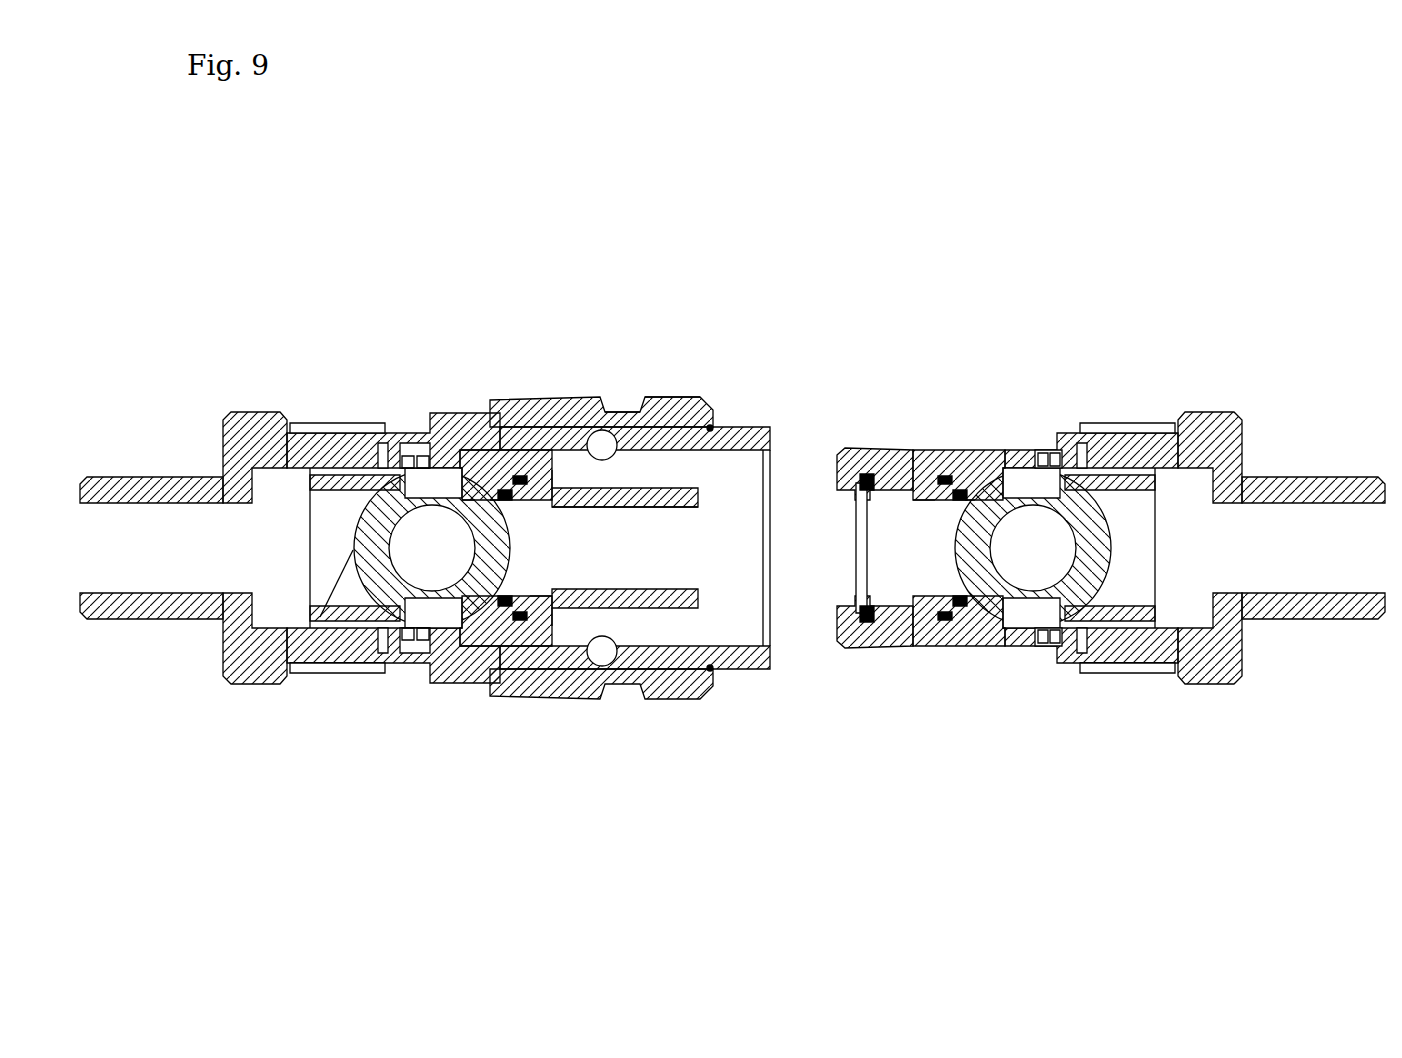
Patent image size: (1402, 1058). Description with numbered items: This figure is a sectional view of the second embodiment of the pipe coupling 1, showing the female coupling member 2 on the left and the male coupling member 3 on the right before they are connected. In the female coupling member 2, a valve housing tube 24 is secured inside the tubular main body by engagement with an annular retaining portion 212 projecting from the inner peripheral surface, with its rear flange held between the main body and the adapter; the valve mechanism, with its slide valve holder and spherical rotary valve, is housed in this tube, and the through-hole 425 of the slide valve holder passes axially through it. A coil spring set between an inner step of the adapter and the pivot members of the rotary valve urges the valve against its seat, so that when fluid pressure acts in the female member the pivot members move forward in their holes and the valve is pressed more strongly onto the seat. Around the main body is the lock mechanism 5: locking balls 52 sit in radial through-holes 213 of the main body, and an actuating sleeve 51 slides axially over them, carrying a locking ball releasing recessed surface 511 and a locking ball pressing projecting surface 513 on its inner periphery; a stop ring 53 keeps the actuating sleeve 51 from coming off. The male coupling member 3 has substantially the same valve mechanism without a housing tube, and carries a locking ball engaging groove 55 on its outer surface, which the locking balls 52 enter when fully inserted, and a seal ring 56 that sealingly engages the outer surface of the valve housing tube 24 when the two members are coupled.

The pipe coupling 1 is at (835, 305).
The female coupling member 2 is at (490, 388).
The male coupling member 3 is at (1117, 408).
The lock mechanism 5 is at (715, 393).
The valve housing tube 24 is at (470, 640).
The actuating sleeve 51 is at (705, 420).
The locking balls 52 is at (600, 440).
The stop ring 53 is at (713, 428).
The locking ball engaging groove 55 is at (875, 440).
The seal ring 56 is at (862, 640).
The annular retaining portion 212 is at (553, 428).
The radial through-holes 213 is at (625, 680).
The through-hole 425 is at (590, 562).
The locking ball releasing recessed surface 511 is at (673, 415).
The locking ball pressing projecting surface 513 is at (610, 425).